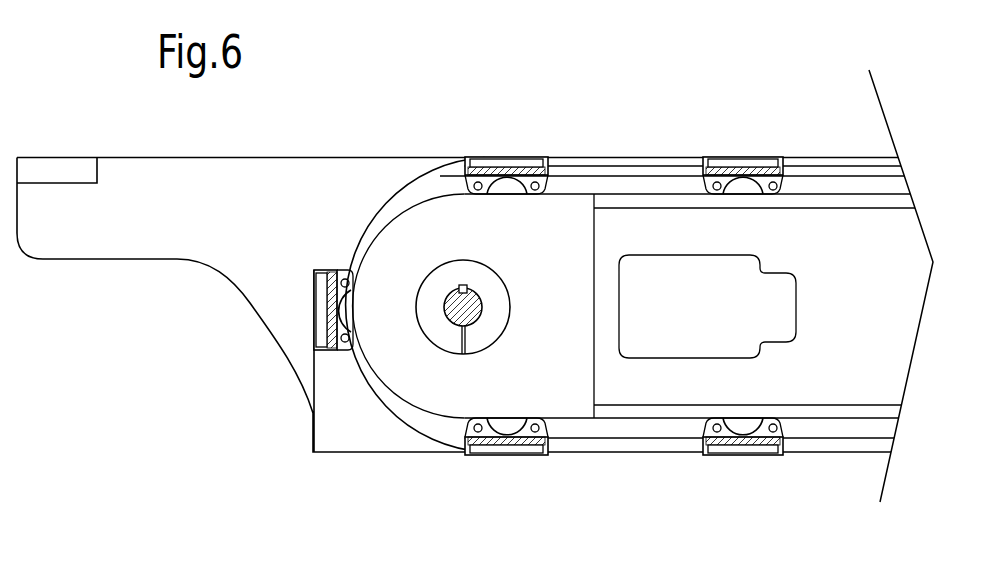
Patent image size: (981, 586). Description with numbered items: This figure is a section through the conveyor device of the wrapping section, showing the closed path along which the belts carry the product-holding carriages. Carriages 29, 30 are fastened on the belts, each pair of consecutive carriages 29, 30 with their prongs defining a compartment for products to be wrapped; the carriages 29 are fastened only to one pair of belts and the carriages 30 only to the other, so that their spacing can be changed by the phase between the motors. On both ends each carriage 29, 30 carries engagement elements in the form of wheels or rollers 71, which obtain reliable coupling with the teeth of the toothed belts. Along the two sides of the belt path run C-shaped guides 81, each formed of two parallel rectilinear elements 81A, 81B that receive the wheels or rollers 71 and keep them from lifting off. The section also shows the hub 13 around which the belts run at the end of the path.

The drive shaft 13 is at (486, 306).
The carriage 29 is at (538, 160).
The carriage 30 is at (715, 163).
The wheels or rollers 71 is at (530, 193).
The C-shaped guide 81 is at (675, 313).
The rectilinear element 81A is at (832, 170).
The rectilinear element 81B is at (831, 197).